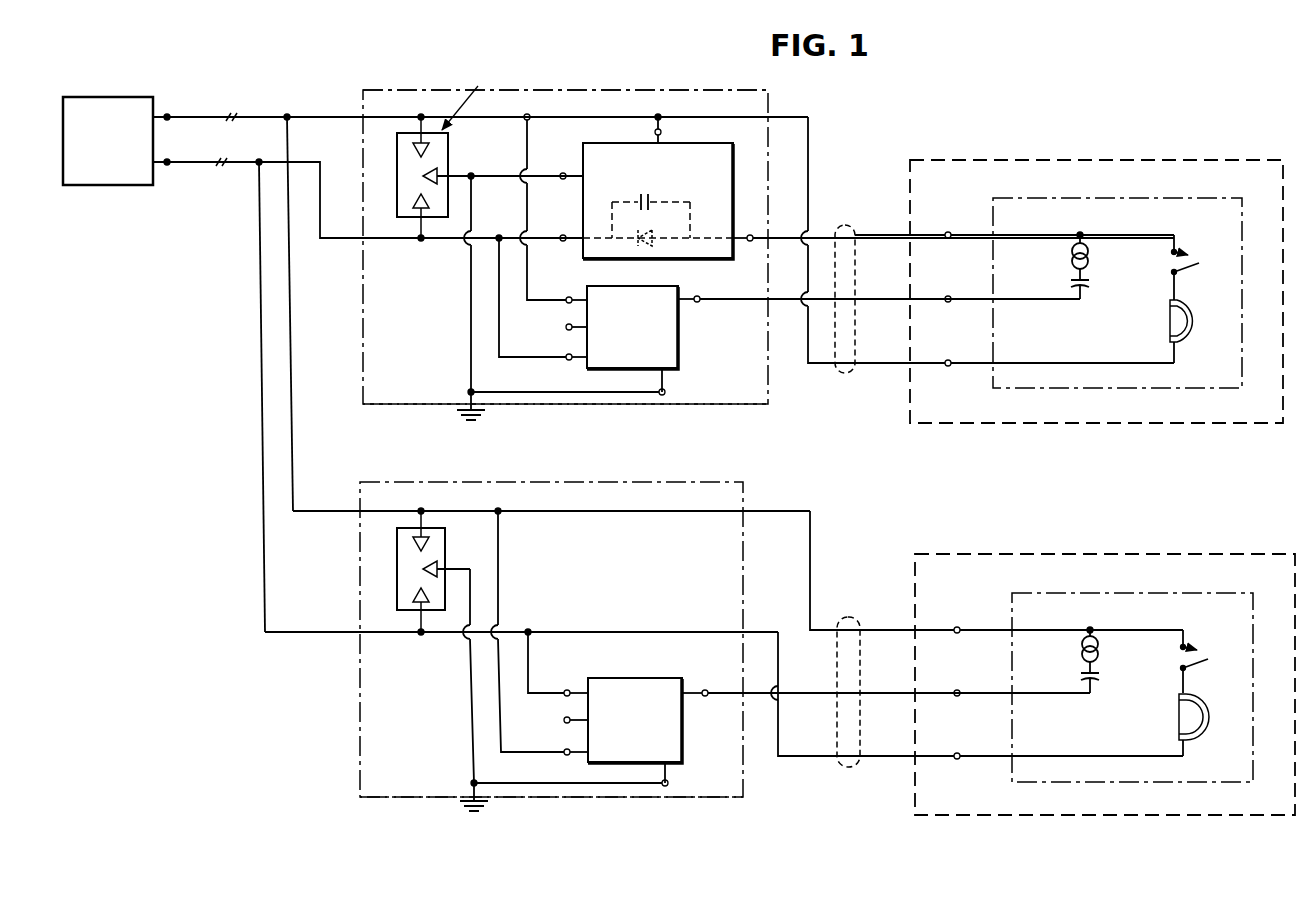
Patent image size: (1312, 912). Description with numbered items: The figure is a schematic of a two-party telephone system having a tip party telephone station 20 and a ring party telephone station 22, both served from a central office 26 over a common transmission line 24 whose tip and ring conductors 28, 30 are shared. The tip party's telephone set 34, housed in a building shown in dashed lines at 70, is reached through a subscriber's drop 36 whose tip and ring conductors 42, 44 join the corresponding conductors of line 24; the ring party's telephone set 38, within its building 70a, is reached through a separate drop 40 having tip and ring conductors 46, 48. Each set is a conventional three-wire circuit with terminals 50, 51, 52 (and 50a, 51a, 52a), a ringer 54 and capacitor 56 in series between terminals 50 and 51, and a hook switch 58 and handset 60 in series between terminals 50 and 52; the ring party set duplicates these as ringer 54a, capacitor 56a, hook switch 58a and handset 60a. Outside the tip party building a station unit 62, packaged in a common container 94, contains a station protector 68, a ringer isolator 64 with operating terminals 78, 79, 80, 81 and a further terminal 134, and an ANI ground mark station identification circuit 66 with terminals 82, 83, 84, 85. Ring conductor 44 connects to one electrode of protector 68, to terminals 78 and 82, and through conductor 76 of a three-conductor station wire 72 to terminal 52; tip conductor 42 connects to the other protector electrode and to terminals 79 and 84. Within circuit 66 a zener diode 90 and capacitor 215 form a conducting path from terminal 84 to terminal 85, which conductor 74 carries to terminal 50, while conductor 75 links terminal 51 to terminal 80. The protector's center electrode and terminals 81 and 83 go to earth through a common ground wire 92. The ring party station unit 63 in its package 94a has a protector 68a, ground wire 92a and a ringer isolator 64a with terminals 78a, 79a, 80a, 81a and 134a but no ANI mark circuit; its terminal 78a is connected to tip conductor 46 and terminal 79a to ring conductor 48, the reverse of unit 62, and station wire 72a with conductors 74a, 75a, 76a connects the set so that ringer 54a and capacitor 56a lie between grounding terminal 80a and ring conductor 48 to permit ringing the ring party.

The central office 26 is at (125, 95).
The transmission line 24 is at (295, 92).
The ring conductor 30 is at (284, 115).
The tip conductor 28 is at (246, 165).
The subscriber's drop 36 is at (358, 85).
The ring conductor 44 is at (337, 117).
The tip conductor 42 is at (330, 240).
The common package 94 is at (674, 90).
The station protector 68 is at (458, 149).
The ringer isolator terminal 78 is at (568, 298).
The ground wire 92 is at (468, 393).
The ringer isolator terminal 79 is at (567, 361).
The terminal 134 is at (566, 329).
The ringer isolator 64 is at (680, 352).
The ringer isolator terminal 80 is at (700, 296).
The ringer isolator terminal 81 is at (666, 390).
The tip party station unit 62 is at (448, 324).
The ANI ground mark station identification circuit 66 is at (752, 165).
The capacitor 215 is at (653, 203).
The zener diode 90 is at (656, 243).
The ANI circuit terminal 82 is at (662, 132).
The ANI circuit terminal 83 is at (568, 162).
The ANI circuit terminal 84 is at (568, 224).
The ANI circuit terminal 85 is at (752, 236).
The station wire conductor 76 is at (928, 366).
The station wire conductor 74 is at (928, 238).
The station wire conductor 75 is at (928, 302).
The station wire 72 is at (848, 373).
The telephone set terminal 50 is at (950, 233).
The telephone set terminal 51 is at (950, 297).
The telephone set terminal 52 is at (950, 361).
The tip party building 70 is at (1193, 160).
The tip party telephone station 20 is at (1184, 394).
The ringer 54 is at (1088, 254).
The capacitor 56 is at (1071, 282).
The hook switch 58 is at (1200, 260).
The handset 60 is at (1196, 318).
The telephone set 34 is at (1183, 363).
The subscriber's drop 40 is at (306, 478).
The ring conductor 48 is at (327, 513).
The tip conductor 46 is at (318, 634).
The common package 94a is at (687, 482).
The station protector 68a is at (445, 556).
The ground wire 92a is at (470, 785).
The ringer isolator terminal 79a is at (566, 756).
The ringer isolator terminal 78a is at (566, 691).
The terminal 134a is at (565, 723).
The ringer isolator 64a is at (683, 735).
The grounding terminal 80a is at (708, 689).
The ringer isolator terminal 81a is at (669, 782).
The ring party station unit 63 is at (449, 720).
The station wire conductor 74a is at (934, 633).
The station wire conductor 76a is at (934, 759).
The station wire conductor 75a is at (934, 696).
The station wire 72a is at (850, 767).
The telephone set terminal 50a is at (959, 628).
The telephone set terminal 51a is at (959, 691).
The telephone set terminal 52a is at (959, 754).
The ring party building 70a is at (1221, 554).
The ring party telephone station 22 is at (1208, 790).
The ringer 54a is at (1098, 647).
The capacitor 56a is at (1081, 676).
The hook switch 58a is at (1206, 656).
The handset 60a is at (1205, 713).
The telephone set 38 is at (1192, 755).